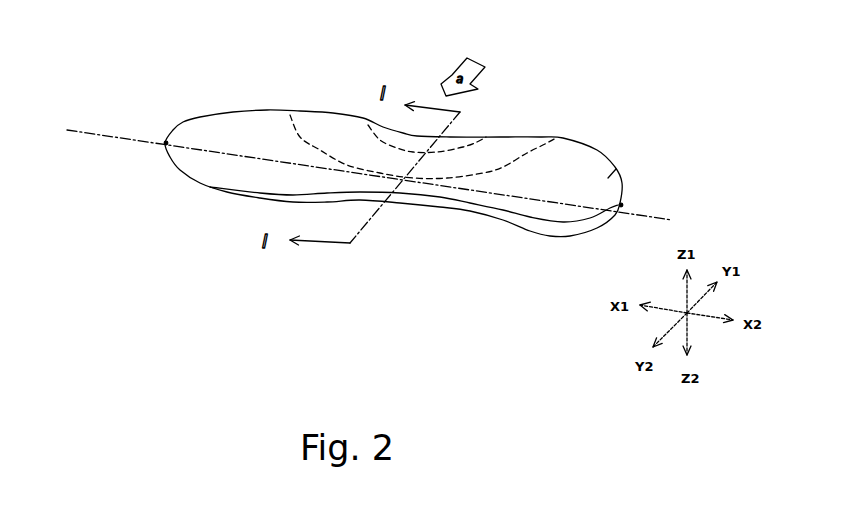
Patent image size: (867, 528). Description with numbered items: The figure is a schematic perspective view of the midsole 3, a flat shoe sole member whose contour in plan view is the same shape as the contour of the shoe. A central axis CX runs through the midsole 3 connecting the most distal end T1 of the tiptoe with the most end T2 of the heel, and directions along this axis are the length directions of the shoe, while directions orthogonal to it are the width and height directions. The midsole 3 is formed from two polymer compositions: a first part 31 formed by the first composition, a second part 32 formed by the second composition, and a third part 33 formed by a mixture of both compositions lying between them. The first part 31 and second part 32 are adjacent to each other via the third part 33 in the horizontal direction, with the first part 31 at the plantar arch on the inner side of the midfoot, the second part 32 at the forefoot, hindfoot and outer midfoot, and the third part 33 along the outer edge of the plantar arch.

The midsole 3 is at (660, 83).
The first part 31 is at (460, 138).
The second part 32 is at (623, 168).
The third part 33 is at (513, 148).
The most distal end of the tiptoe T1 is at (167, 143).
The most end of the heel T2 is at (628, 204).
The central axis CX is at (93, 128).